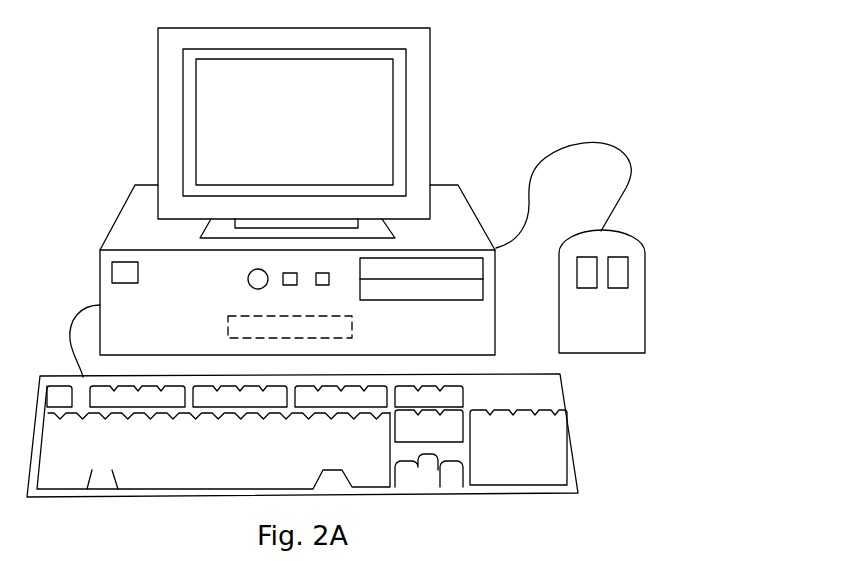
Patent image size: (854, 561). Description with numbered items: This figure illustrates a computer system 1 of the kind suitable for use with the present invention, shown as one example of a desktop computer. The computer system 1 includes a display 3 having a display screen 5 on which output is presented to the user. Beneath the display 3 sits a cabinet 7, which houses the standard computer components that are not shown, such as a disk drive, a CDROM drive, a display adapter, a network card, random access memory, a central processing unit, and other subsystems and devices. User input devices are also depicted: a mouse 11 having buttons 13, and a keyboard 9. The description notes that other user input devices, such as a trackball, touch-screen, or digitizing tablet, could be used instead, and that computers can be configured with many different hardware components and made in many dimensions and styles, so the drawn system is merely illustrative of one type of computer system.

The computer system 1 is at (583, 52).
The display 3 is at (333, 133).
The display screen 5 is at (372, 113).
The cabinet 7 is at (450, 220).
The keyboard 9 is at (167, 505).
The mouse 11 is at (645, 268).
The buttons 13 is at (585, 257).